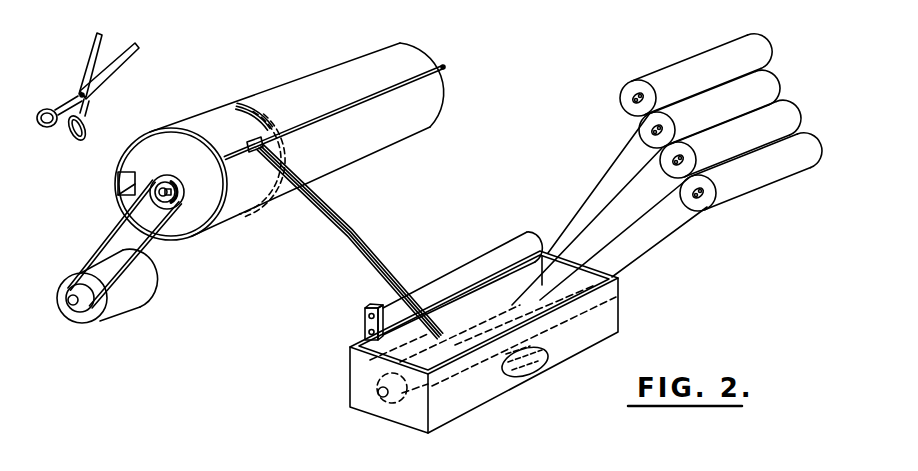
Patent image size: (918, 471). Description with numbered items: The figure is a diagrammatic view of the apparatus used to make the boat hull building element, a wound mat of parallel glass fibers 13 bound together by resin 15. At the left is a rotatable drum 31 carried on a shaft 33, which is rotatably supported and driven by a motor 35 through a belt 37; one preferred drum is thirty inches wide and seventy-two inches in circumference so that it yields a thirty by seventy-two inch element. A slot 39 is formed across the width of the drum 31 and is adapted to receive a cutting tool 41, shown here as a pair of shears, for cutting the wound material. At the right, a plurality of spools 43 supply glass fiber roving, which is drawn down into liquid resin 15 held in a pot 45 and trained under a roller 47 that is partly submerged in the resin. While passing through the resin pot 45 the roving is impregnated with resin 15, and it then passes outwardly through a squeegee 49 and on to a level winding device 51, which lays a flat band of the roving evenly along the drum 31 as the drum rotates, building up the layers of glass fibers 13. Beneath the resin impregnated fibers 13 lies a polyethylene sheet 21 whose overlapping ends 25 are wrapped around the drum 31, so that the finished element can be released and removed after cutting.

The glass fibers 13 is at (612, 240).
The resin 15 is at (522, 378).
The polyethylene sheet 21 is at (176, 130).
The overlapping ends 25 is at (233, 213).
The rotatable drum 31 is at (363, 62).
The shaft 33 is at (182, 207).
The motor 35 is at (135, 295).
The belt 37 is at (112, 234).
The slot 39 is at (118, 185).
The cutting tool 41 is at (68, 140).
The spools 43 is at (763, 53).
The pot 45 is at (612, 314).
The roller 47 is at (350, 370).
The squeegee 49 is at (485, 258).
The level winding device 51 is at (258, 138).